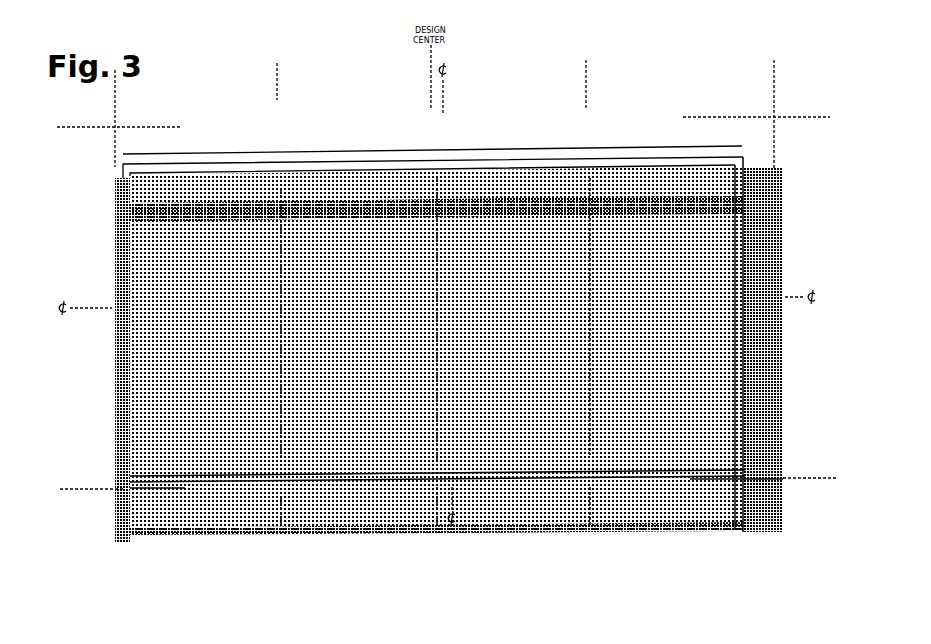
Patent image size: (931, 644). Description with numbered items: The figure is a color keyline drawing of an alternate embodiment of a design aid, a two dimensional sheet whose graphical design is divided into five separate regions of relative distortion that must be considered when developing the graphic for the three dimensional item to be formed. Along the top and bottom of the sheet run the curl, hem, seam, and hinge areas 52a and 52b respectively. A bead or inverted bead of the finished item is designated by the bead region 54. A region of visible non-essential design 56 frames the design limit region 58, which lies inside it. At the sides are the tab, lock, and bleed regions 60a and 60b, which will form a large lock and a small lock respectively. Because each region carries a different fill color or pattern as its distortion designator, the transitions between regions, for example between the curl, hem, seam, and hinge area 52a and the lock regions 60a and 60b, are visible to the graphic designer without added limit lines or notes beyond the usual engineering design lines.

The curl, hem, seam, and hinge area 52a is at (258, 193).
The curl, hem, seam, and hinge area 52b is at (328, 540).
The bead region 54 is at (352, 208).
The region of visible non-essential design 56 is at (503, 213).
The design limit region 58 is at (640, 228).
The tab, lock, and bleed region 60a is at (760, 185).
The tab, lock, and bleed region 60b is at (120, 336).